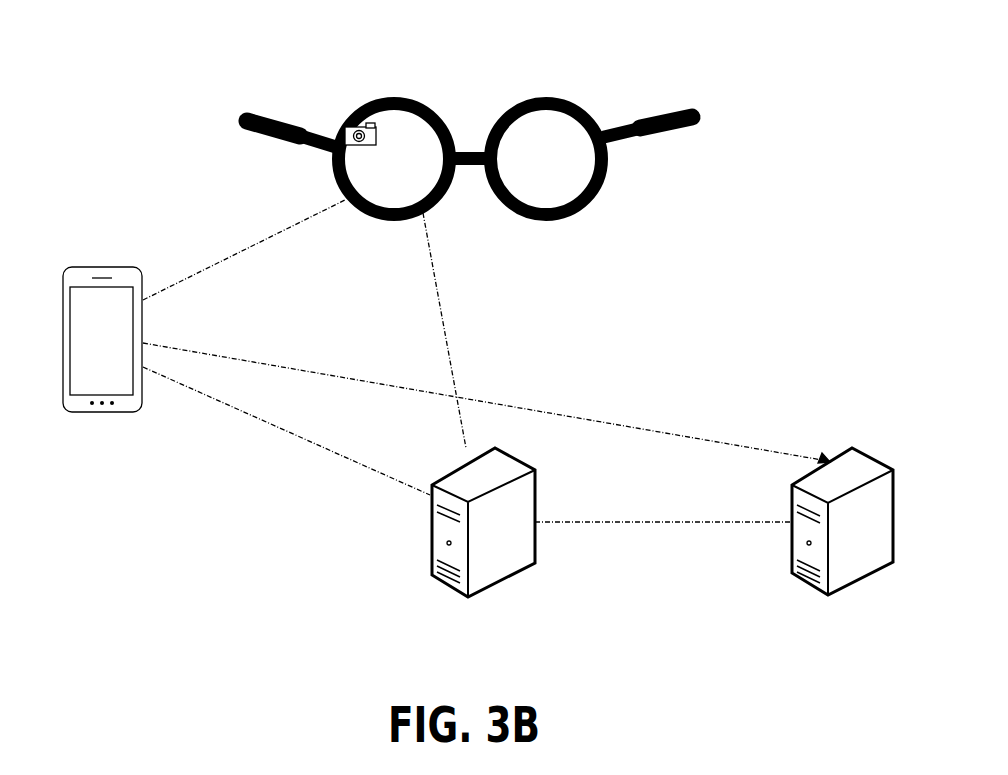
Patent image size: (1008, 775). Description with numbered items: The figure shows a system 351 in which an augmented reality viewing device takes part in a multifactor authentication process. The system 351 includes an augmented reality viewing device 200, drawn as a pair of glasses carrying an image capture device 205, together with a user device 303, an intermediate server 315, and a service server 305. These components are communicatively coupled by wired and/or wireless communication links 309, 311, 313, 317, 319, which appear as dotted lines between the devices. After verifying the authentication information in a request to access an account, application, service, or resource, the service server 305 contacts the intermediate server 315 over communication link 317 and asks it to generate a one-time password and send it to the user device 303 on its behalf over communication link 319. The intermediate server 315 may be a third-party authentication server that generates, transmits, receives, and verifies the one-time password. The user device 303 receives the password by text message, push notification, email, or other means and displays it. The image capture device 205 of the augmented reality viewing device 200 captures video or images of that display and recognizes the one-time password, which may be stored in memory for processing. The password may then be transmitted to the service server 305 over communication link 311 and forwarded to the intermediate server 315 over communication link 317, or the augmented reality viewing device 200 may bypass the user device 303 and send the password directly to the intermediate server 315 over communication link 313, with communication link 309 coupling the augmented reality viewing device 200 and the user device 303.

The augmented reality viewing device 200 is at (598, 197).
The image capture device 205 is at (346, 124).
The user device 303 is at (92, 265).
The service server 305 is at (852, 448).
The communication link 309 is at (207, 273).
The communication link 311 is at (330, 367).
The communication link 313 is at (443, 318).
The intermediate server 315 is at (535, 565).
The communication link 317 is at (695, 517).
The communication link 319 is at (317, 447).
The system 351 is at (162, 582).